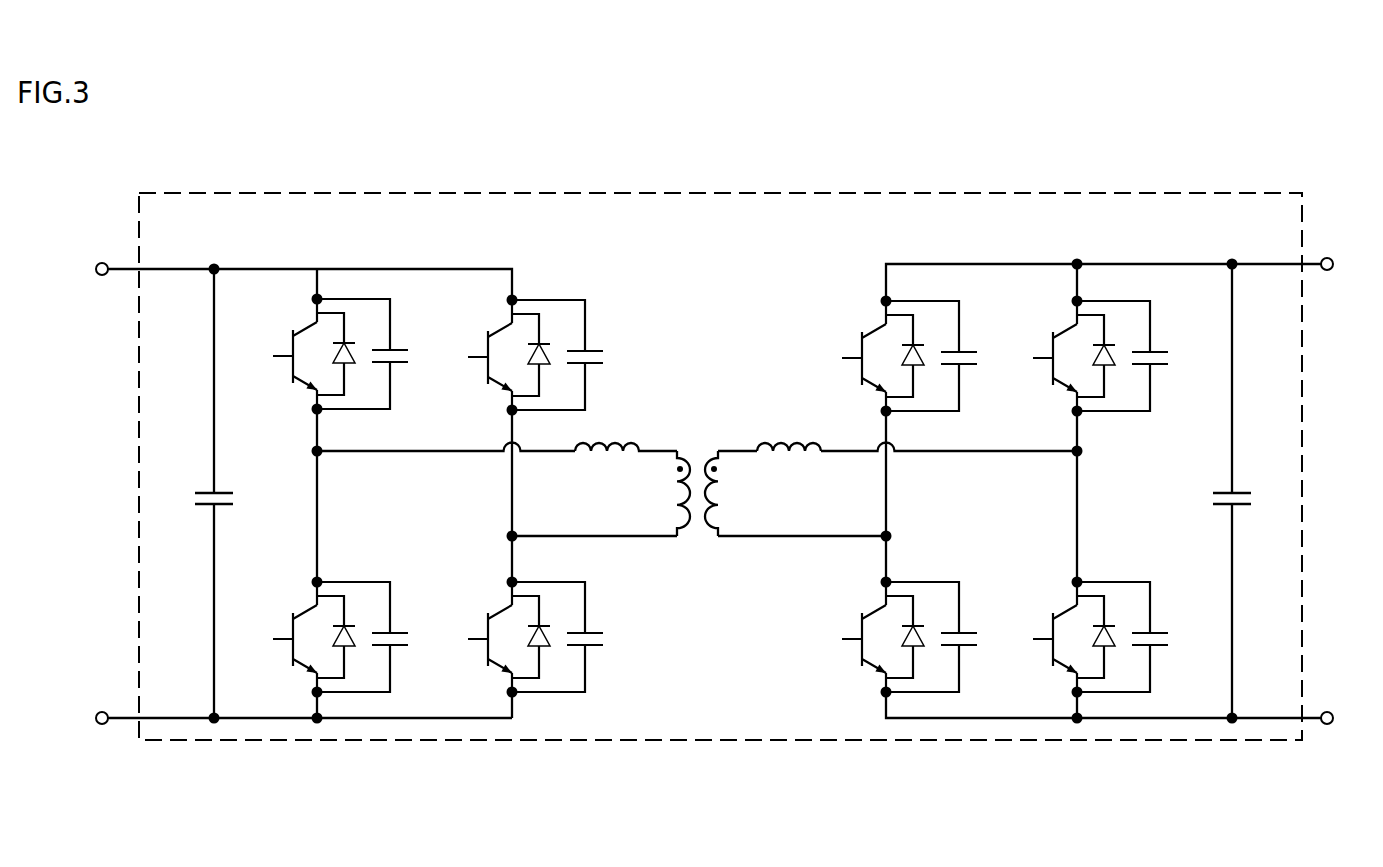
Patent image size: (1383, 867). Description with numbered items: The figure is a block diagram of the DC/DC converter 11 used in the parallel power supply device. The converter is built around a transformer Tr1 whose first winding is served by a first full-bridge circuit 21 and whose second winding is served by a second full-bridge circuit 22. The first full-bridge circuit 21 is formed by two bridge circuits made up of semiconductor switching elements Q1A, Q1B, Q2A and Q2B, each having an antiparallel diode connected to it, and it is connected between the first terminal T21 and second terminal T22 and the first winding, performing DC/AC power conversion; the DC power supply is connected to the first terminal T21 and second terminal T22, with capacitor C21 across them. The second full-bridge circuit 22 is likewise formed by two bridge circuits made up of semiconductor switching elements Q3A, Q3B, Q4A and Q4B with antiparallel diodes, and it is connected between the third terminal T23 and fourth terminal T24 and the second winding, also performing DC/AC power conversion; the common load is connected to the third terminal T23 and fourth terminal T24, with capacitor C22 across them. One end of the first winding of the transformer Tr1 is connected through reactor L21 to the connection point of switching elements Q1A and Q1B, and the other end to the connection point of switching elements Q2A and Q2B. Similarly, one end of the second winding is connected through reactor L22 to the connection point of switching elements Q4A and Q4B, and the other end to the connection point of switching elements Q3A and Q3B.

The DC/DC converter 11 is at (715, 192).
The first full-bridge circuit 21 is at (412, 261).
The second full-bridge circuit 22 is at (975, 262).
The first terminal T21 is at (76, 270).
The second terminal T22 is at (73, 720).
The third terminal T23 is at (1352, 266).
The fourth terminal T24 is at (1352, 720).
The capacitor C21 is at (208, 487).
The capacitor C22 is at (1236, 488).
The semiconductor switching element Q1A is at (322, 354).
The semiconductor switching element Q1B is at (322, 637).
The semiconductor switching element Q2A is at (516, 355).
The semiconductor switching element Q2B is at (516, 637).
The semiconductor switching element Q3A is at (888, 356).
The semiconductor switching element Q3B is at (888, 637).
The semiconductor switching element Q4A is at (1080, 356).
The semiconductor switching element Q4B is at (1080, 637).
The reactor L21 is at (627, 434).
The reactor L22 is at (783, 438).
The transformer Tr1 is at (700, 450).